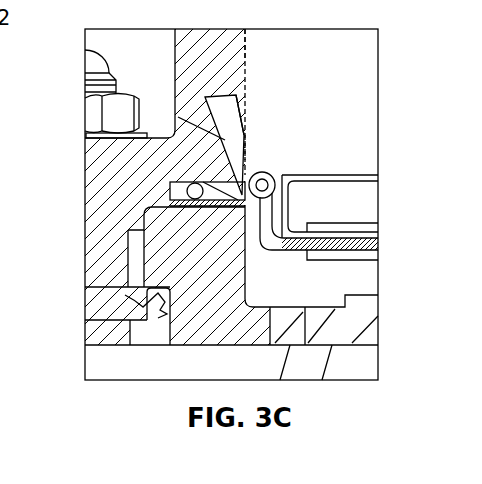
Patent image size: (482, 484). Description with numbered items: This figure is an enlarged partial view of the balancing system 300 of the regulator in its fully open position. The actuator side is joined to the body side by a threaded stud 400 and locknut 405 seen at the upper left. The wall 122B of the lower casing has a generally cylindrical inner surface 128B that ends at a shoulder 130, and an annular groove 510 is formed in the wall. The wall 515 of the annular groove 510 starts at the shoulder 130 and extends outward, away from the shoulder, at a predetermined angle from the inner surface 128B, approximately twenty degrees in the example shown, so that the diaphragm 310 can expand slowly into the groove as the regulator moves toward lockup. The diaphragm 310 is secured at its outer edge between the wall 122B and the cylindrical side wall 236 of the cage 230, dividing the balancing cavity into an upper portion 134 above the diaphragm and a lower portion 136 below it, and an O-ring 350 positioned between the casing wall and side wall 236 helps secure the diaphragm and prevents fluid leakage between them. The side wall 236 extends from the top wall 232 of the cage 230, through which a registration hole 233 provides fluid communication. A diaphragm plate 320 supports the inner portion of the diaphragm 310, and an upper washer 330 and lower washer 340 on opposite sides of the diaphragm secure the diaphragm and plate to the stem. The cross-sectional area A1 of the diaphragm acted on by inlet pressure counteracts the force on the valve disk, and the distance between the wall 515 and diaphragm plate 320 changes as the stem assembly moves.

The wall 122B is at (188, 62).
The inner surface 128B is at (249, 72).
The threaded stud 400 is at (86, 50).
The locknut 405 is at (121, 120).
The annular groove 510 is at (236, 110).
The wall 515 is at (225, 141).
The shoulder 130 is at (240, 186).
The O-ring 350 is at (170, 200).
The cross-sectional area A1 is at (144, 255).
The side wall 236 is at (245, 272).
The cage 230 is at (213, 348).
The top wall 232 is at (370, 332).
The registration hole 233 is at (283, 330).
The upper portion 134 is at (358, 141).
The lower portion 136 is at (338, 296).
The balancing system 300 is at (364, 175).
The diaphragm plate 320 is at (288, 207).
The upper washer 330 is at (366, 226).
The lower washer 340 is at (360, 257).
The diaphragm 310 is at (280, 250).